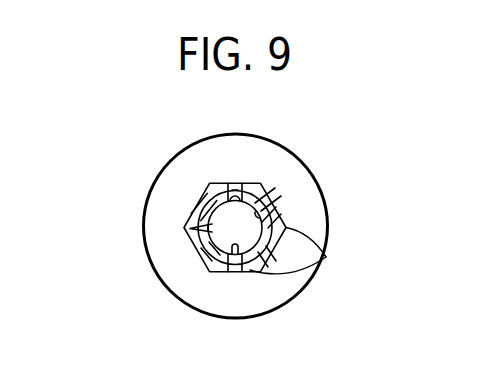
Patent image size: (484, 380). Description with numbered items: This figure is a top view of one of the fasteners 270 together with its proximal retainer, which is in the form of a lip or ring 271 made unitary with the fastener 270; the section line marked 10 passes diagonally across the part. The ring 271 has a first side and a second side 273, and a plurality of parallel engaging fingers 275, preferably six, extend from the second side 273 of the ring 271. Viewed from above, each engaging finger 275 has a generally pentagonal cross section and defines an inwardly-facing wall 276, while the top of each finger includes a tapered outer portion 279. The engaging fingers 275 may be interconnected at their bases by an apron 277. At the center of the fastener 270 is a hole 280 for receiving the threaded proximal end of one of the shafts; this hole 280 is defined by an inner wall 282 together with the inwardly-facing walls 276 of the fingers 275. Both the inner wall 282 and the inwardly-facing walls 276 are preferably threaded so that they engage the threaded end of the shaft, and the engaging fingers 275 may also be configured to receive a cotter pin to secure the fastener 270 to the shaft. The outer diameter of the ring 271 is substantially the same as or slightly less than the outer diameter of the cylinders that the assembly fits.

The section line 10- 10 is at (120, 160).
The fastener 270 is at (169, 151).
The ring 271 is at (303, 190).
The second side 273 is at (243, 147).
The engaging finger 275 is at (217, 262).
The inwardly-facing wall 276 is at (231, 183).
The apron 277 is at (247, 182).
The tapered outer portion 279 is at (326, 257).
The hole 280 is at (266, 212).
The inner wall 282 is at (232, 270).